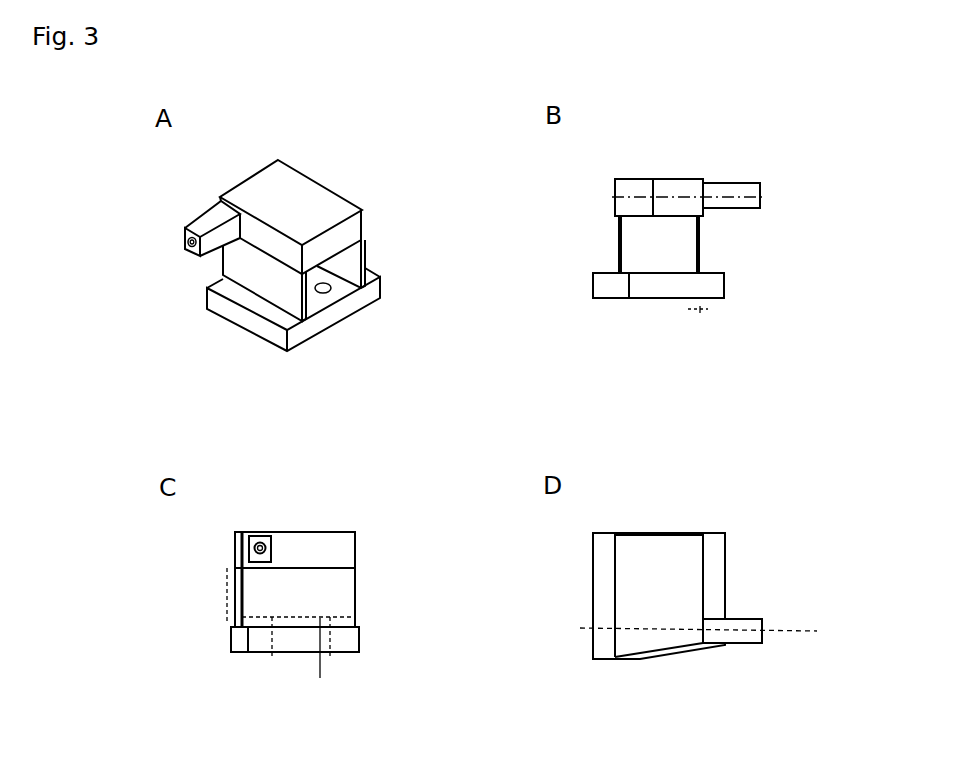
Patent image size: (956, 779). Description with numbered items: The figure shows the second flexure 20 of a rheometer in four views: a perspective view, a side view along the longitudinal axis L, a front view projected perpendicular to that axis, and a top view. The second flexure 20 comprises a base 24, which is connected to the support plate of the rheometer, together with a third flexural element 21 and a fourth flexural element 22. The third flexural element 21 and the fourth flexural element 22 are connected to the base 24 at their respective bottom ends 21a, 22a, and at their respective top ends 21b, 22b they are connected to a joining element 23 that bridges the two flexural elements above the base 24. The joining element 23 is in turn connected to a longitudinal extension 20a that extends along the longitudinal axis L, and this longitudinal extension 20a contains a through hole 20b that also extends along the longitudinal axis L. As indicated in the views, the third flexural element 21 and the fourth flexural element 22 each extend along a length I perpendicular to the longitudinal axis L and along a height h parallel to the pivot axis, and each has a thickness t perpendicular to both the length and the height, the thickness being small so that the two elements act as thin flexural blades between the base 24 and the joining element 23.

The second flexure 20 is at (292, 143).
The longitudinal extension 20a is at (215, 222).
The through hole 20b is at (188, 242).
The third flexural element 21 is at (227, 268).
The bottom end of third flexural element 21a is at (700, 276).
The top end of third flexural element 21b is at (699, 213).
The fourth flexural element 22 is at (353, 261).
The bottom end of fourth flexural element 22a is at (620, 278).
The top end of fourth flexural element 22b is at (617, 213).
The joining element 23 is at (300, 187).
The base 24 is at (245, 318).